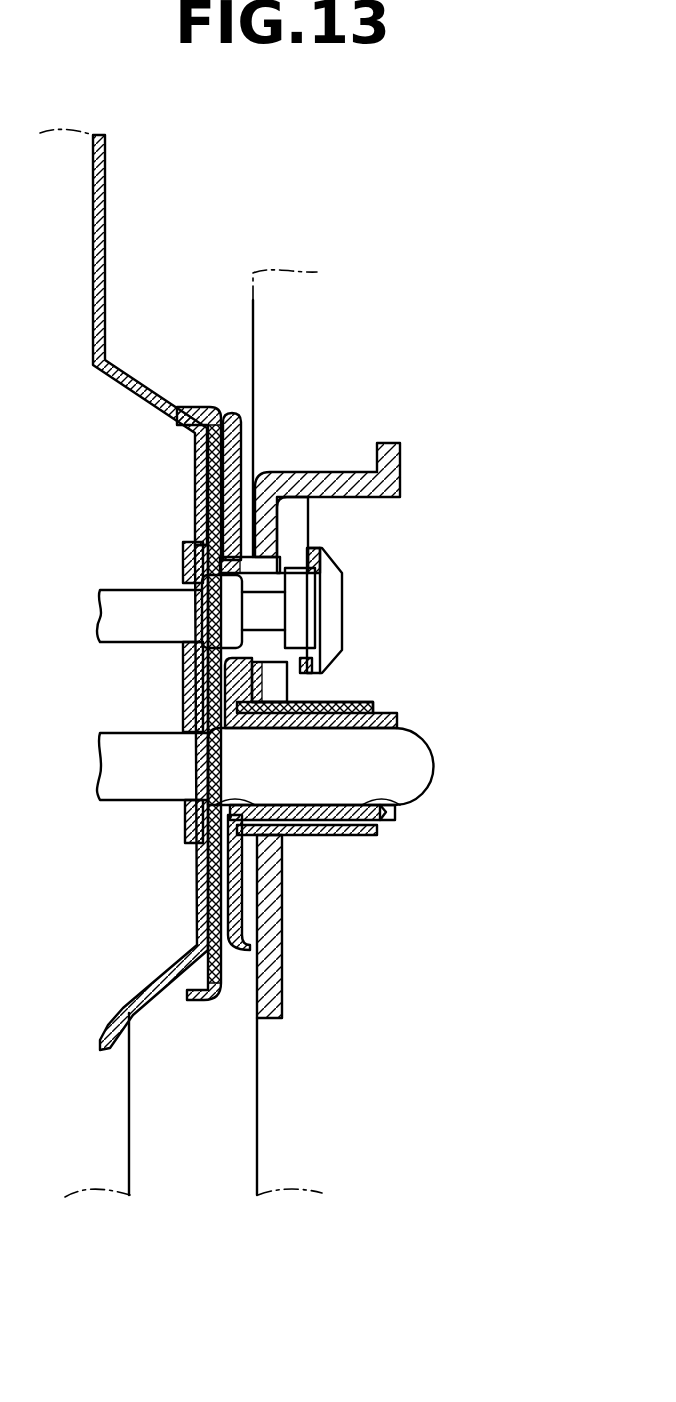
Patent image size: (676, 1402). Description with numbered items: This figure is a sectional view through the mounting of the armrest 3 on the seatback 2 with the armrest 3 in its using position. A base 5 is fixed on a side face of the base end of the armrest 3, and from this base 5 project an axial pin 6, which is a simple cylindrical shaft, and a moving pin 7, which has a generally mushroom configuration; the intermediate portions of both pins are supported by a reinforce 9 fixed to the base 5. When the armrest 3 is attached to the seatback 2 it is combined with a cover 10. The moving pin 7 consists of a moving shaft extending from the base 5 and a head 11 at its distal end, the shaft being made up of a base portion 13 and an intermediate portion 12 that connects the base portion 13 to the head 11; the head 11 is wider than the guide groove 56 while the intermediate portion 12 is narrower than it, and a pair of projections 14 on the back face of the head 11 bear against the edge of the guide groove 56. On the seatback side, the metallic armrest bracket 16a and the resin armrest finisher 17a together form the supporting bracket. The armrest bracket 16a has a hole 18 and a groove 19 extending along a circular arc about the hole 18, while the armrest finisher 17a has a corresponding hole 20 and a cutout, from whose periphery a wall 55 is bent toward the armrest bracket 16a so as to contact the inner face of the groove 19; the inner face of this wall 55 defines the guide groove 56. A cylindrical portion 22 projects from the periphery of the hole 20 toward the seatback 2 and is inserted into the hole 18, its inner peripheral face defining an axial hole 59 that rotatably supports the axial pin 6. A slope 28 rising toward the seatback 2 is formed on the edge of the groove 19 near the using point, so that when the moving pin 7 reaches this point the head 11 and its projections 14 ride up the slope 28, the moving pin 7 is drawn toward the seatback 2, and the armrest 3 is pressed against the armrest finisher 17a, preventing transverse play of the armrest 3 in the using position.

The seatback 2 is at (316, 1210).
The armrest 3 is at (102, 1210).
The base 5 is at (107, 200).
The axial pin 6 is at (433, 746).
The moving pin 7 is at (358, 597).
The reinforce 9 is at (192, 545).
The cover 10 is at (209, 405).
The head 11 is at (330, 562).
The intermediate portion 12 is at (330, 622).
The base portion 13 is at (155, 605).
The projection 14 is at (330, 532).
The armrest bracket 16a is at (283, 996).
The armrest finisher 17a is at (250, 910).
The hole 18 is at (310, 836).
The groove 19 is at (205, 581).
The hole 20 is at (190, 815).
The cylindrical portion 22 is at (398, 818).
The slope 28 is at (312, 520).
The wall 55 is at (253, 557).
The guide groove 56 is at (292, 560).
The axial hole 59 is at (398, 812).